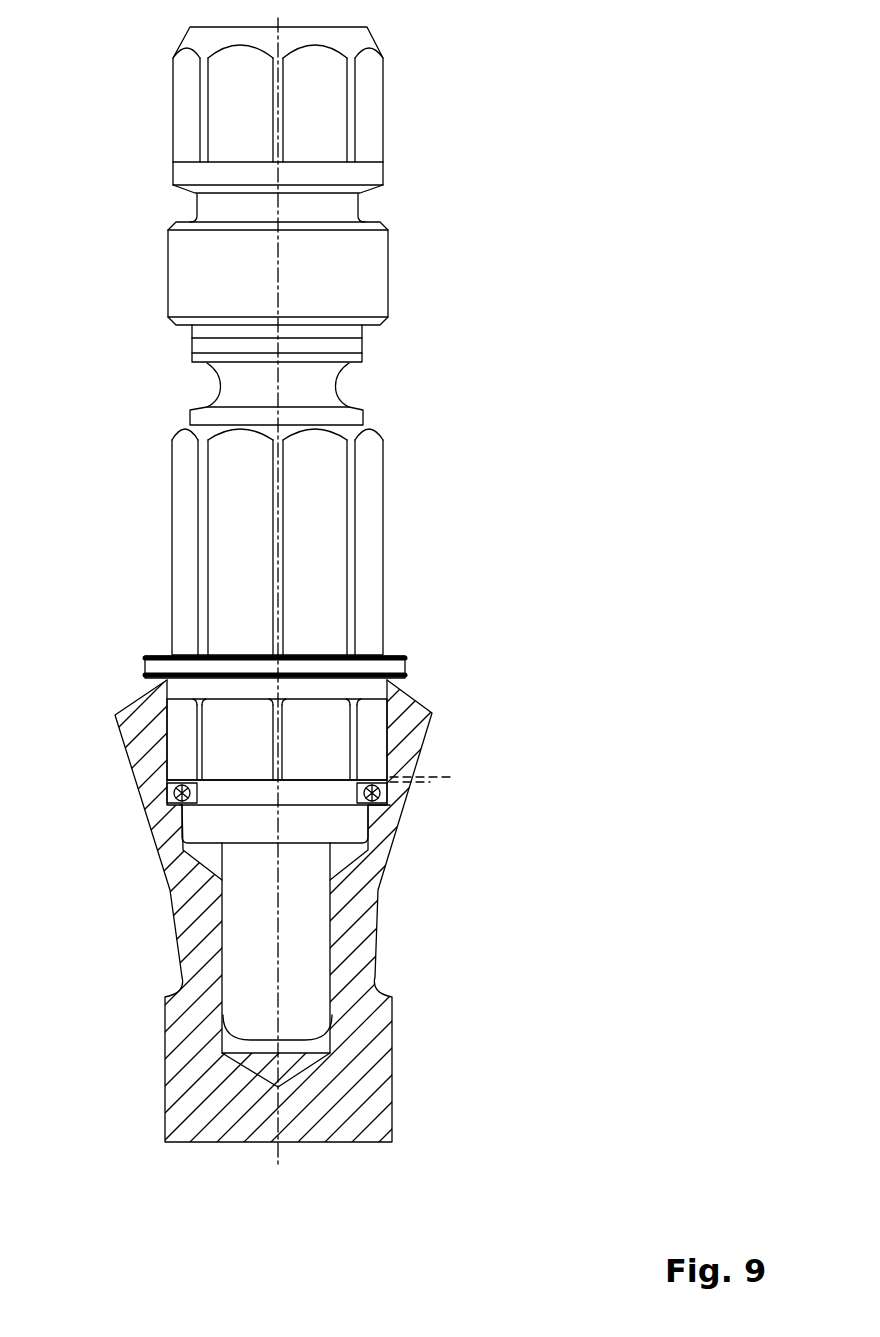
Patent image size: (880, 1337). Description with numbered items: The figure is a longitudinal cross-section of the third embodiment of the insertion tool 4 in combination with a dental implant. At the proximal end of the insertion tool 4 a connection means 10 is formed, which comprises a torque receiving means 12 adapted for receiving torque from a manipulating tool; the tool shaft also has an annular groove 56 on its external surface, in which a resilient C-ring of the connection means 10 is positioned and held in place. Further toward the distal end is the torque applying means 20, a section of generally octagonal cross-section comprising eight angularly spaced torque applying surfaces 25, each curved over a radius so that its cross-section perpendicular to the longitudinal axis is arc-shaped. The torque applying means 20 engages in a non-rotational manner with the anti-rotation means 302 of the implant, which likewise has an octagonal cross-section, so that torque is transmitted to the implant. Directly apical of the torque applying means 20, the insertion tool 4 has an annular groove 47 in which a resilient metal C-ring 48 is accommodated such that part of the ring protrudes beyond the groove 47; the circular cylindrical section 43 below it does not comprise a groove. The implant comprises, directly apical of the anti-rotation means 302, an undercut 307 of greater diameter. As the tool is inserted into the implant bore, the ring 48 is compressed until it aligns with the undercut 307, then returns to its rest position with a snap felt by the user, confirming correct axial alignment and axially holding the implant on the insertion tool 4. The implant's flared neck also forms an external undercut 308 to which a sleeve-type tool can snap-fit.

The connection means 10 is at (430, 278).
The torque receiving means 12 is at (158, 45).
The annular groove 56 is at (176, 203).
The insertion tool 4 is at (117, 475).
The external undercut 308 is at (120, 731).
The torque applying means 20 is at (390, 705).
The torque applying surfaces 25 is at (277, 739).
The anti-rotation means 302 is at (462, 766).
The undercut 307 is at (391, 804).
The resilient metal C-ring 48 is at (167, 794).
The annular groove 47 is at (218, 791).
The circular cylindrical section 43 is at (276, 965).